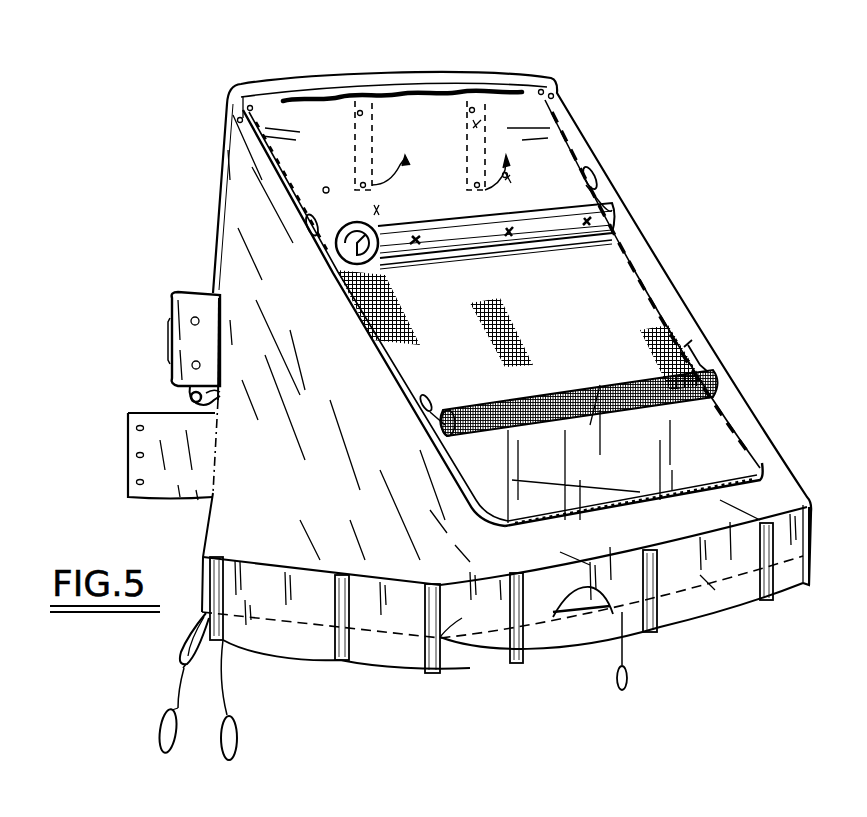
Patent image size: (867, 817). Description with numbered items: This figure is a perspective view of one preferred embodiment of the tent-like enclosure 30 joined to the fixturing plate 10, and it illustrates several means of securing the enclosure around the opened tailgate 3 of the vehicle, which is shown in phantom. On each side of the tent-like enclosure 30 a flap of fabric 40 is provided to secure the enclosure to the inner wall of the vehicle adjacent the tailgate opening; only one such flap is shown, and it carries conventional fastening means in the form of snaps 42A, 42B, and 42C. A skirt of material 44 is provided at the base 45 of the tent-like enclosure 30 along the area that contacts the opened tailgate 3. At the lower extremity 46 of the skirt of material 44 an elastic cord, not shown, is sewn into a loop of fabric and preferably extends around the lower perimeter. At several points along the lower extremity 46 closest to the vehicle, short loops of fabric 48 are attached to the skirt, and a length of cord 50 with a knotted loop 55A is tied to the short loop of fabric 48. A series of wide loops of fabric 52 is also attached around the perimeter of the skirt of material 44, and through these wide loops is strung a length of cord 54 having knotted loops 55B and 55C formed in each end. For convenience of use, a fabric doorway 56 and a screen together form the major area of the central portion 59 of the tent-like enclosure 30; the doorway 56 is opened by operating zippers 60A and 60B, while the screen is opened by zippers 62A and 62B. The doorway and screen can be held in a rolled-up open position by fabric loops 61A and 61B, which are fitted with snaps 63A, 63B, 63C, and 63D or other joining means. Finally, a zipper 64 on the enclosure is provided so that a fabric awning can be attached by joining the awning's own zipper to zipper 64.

The tailgate 3 is at (400, 638).
The fixturing plate 10 is at (280, 84).
The tent-like enclosure 30 is at (238, 238).
The flap of fabric 40 is at (170, 418).
The snap 42A is at (137, 428).
The snap 42B is at (137, 455).
The snap 42C is at (137, 482).
The skirt of material 44 is at (712, 575).
The base 45 is at (743, 533).
The lower extremity 46 is at (466, 650).
The short loop of fabric 48 is at (186, 647).
The length of cord 50 is at (178, 677).
The wide loop of fabric 52 is at (337, 660).
The length of cord 54 is at (232, 688).
The knotted loop 55A is at (162, 721).
The knotted loop 55B is at (238, 740).
The knotted loop 55C is at (630, 688).
The fabric doorway 56 is at (612, 225).
The central portion 59 is at (600, 282).
The zipper 60A is at (300, 232).
The zipper 60B is at (598, 182).
The fabric loop 61A is at (358, 148).
The fabric loop 61B is at (473, 148).
The zipper 62A is at (422, 402).
The zipper 62B is at (692, 348).
The snap 63A is at (360, 116).
The snap 63B is at (341, 217).
The snap 63C is at (506, 186).
The snap 63D is at (484, 118).
The zipper 64 is at (385, 98).